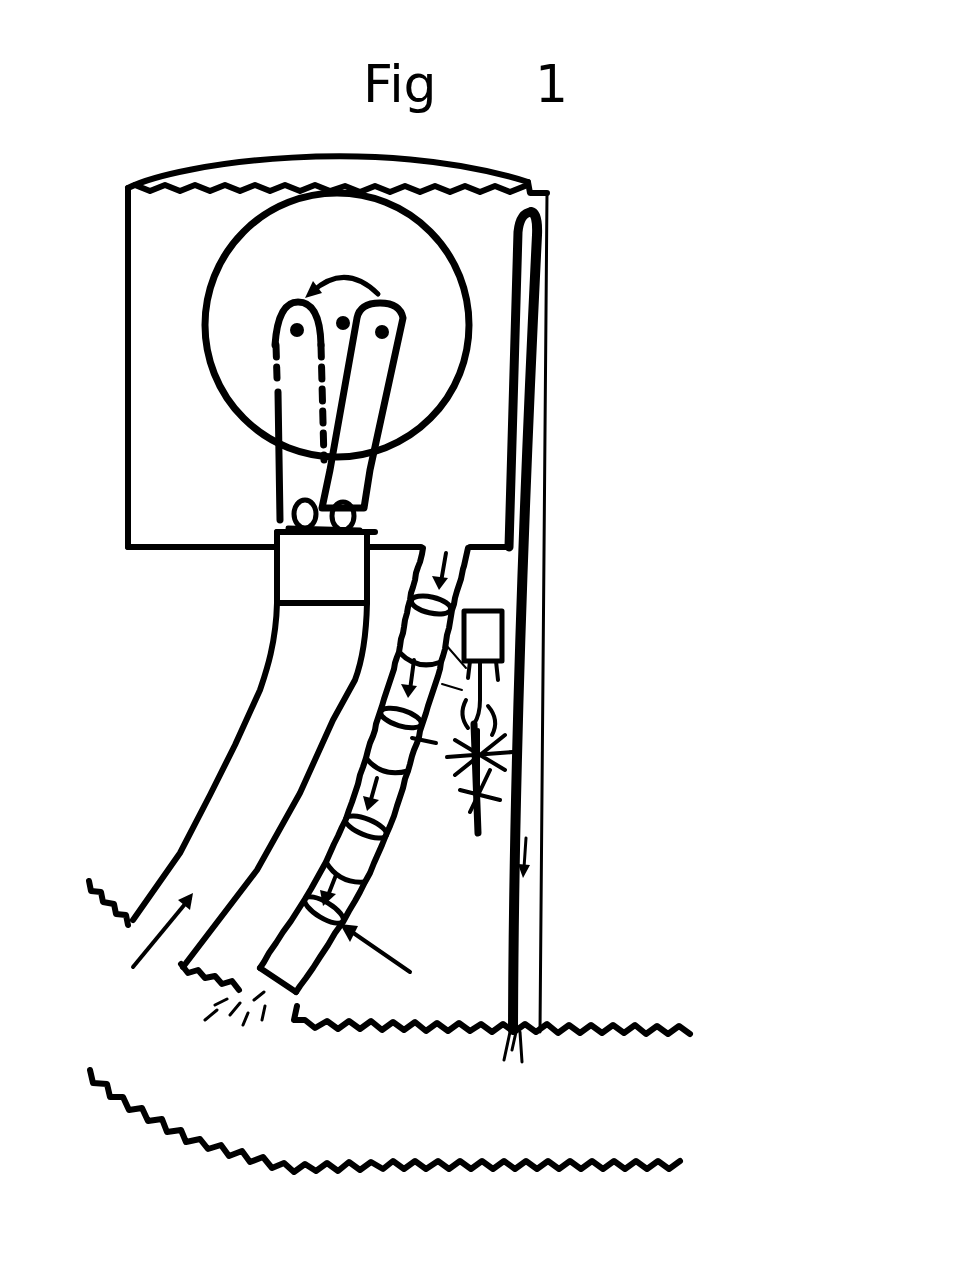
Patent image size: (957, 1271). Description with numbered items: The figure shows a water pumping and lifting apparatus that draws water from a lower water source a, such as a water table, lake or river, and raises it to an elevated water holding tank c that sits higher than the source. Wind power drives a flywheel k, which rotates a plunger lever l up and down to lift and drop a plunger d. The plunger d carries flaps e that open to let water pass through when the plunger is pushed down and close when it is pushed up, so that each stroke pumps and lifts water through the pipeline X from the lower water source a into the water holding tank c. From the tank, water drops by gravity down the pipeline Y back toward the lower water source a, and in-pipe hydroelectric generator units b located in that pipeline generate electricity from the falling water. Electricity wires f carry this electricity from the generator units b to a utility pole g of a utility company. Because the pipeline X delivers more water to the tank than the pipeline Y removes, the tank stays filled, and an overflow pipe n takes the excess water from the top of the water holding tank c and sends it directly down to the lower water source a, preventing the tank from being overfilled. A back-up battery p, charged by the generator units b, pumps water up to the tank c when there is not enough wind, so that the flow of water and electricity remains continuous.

The lower water source a is at (385, 1121).
The in-pipe hydroelectric generator units b is at (336, 786).
The water holding tank c is at (118, 412).
The plunger d is at (326, 567).
The flaps e is at (284, 504).
The electricity wires f is at (462, 753).
The utility pole g is at (462, 826).
The flywheel k is at (337, 325).
The plunger lever l is at (339, 411).
The overflow pipe n is at (552, 192).
The back-up battery p is at (472, 667).
The pipeline X is at (228, 796).
The pipeline Y is at (394, 954).